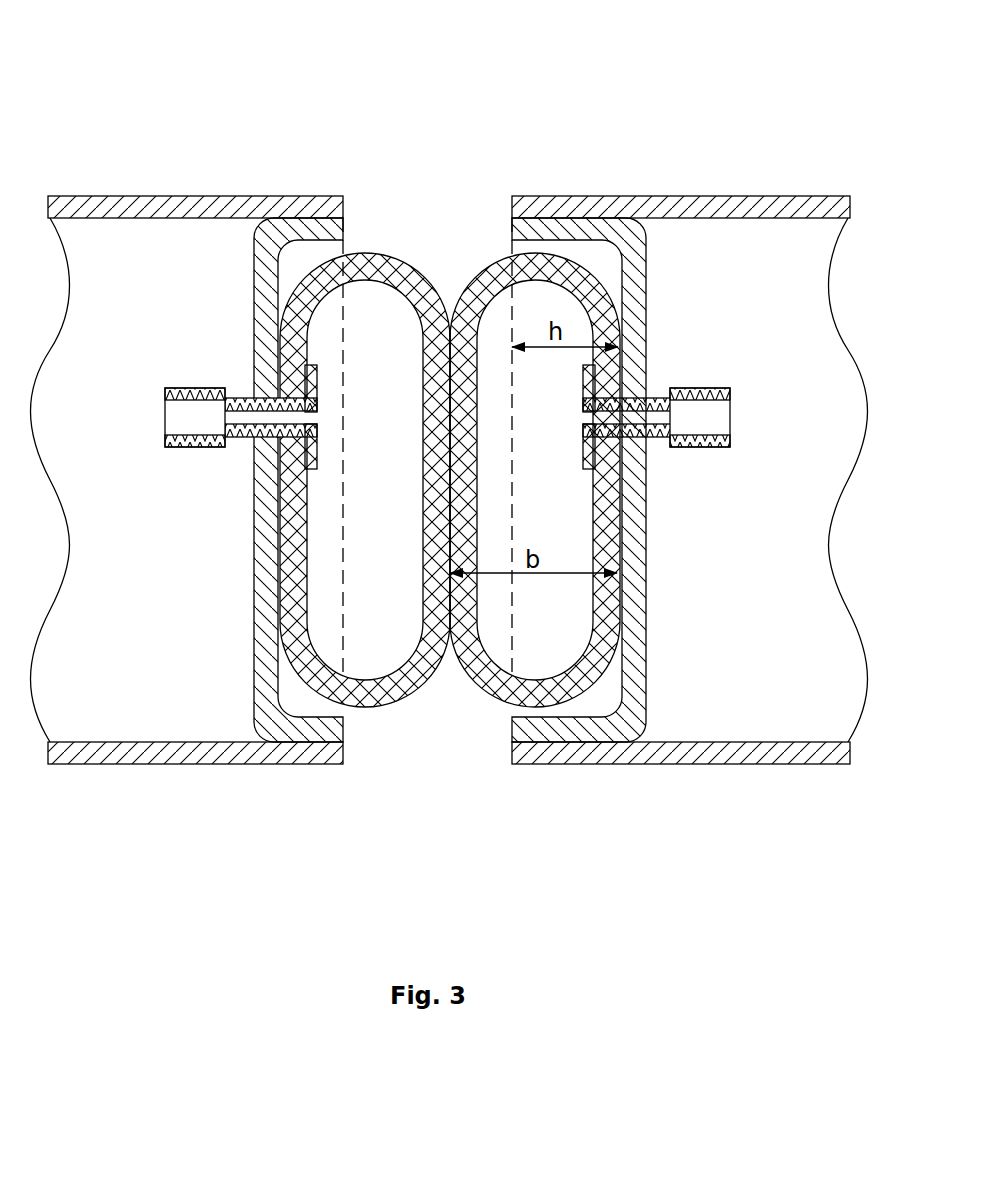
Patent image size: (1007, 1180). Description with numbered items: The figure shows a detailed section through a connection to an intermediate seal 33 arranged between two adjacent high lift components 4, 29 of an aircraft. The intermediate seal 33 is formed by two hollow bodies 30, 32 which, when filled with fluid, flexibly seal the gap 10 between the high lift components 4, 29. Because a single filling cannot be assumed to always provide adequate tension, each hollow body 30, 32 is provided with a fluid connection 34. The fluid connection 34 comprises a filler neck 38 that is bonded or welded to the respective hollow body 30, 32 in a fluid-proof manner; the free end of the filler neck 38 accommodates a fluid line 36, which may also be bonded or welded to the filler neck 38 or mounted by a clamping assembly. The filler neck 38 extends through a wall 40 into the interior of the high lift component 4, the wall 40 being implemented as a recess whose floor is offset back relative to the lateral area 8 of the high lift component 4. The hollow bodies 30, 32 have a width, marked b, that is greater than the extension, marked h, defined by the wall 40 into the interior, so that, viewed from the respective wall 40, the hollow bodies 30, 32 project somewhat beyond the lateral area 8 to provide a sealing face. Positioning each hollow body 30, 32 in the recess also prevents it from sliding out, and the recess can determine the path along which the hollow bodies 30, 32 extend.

The high lift component 4 is at (102, 700).
The high lift component 29 is at (731, 708).
The gap 10 is at (440, 428).
The lateral area 8 is at (348, 247).
The hollow body 30 is at (383, 707).
The hollow body 32 is at (493, 690).
The intermediate seal 33 is at (411, 736).
The fluid connection 34 is at (440, 421).
The fluid line 36 is at (187, 447).
The filler neck 38 is at (238, 437).
The wall 40 is at (262, 632).